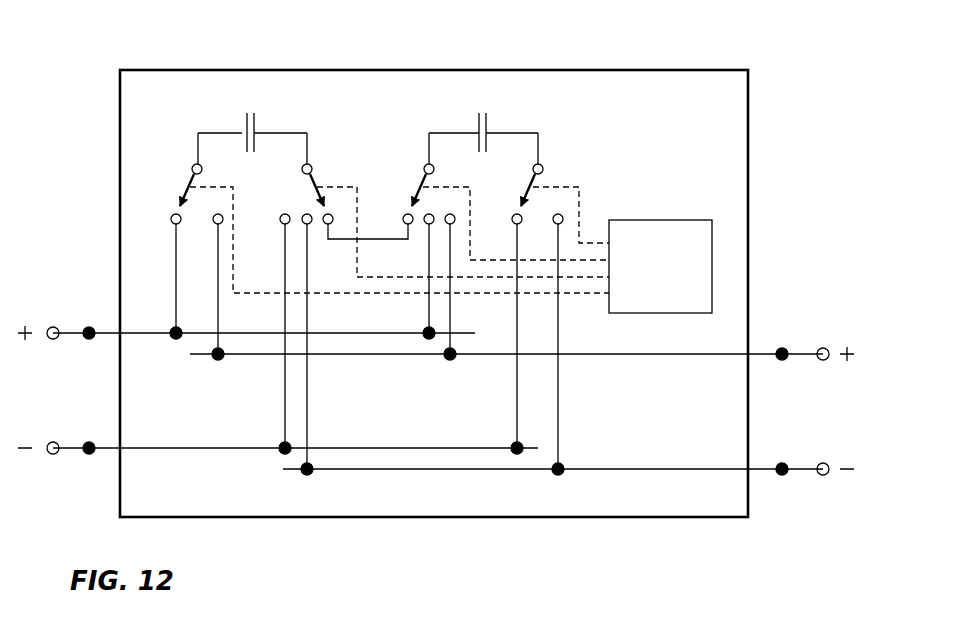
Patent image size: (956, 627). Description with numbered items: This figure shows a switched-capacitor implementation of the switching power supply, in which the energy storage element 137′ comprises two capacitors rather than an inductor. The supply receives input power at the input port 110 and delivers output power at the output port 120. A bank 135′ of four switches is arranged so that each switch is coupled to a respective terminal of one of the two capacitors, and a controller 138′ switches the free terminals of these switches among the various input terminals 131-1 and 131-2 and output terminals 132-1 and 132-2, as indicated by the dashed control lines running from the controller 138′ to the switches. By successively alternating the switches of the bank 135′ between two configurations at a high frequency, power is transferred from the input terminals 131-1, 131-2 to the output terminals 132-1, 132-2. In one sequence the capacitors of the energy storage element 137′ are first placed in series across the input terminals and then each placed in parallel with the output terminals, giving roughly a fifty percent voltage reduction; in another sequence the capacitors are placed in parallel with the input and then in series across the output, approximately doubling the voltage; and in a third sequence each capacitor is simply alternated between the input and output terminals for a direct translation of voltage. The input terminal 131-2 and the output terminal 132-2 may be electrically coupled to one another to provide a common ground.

The bank of switches 135′ is at (186, 161).
The energy storage element 137′ is at (477, 122).
The controller 138′ is at (636, 220).
The input port 110 is at (55, 316).
The output port 120 is at (823, 338).
The input terminal 131-1 is at (87, 340).
The input terminal 131-2 is at (87, 455).
The output terminal 132-1 is at (785, 361).
The output terminal 132-2 is at (785, 476).